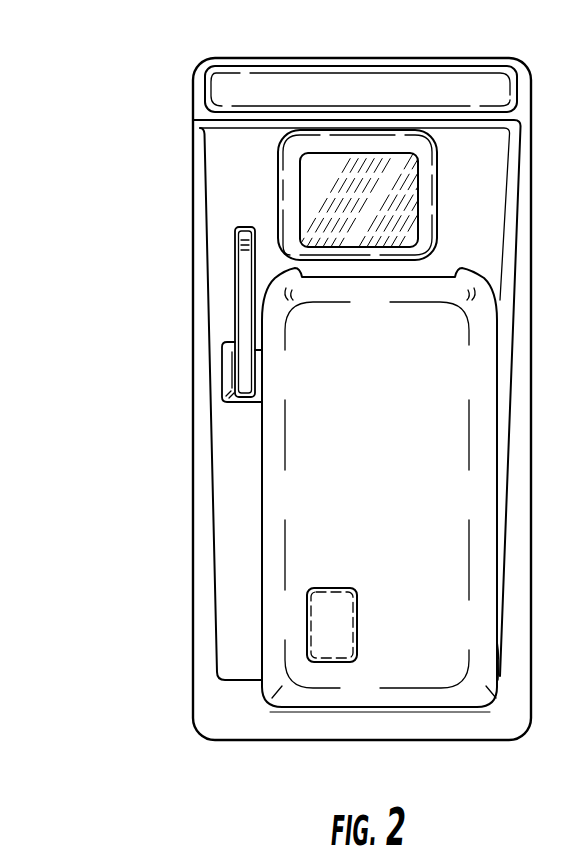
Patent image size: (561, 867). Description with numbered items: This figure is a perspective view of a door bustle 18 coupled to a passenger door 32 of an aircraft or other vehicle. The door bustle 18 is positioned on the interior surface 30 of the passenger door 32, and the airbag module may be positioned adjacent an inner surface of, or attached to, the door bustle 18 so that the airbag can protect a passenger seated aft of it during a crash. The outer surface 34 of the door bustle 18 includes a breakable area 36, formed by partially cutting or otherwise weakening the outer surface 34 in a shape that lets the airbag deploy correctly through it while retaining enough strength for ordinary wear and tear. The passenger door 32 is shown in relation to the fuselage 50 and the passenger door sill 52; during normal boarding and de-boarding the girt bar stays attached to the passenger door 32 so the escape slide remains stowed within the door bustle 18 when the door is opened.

The door bustle 18 is at (317, 376).
The interior surface 30 is at (468, 168).
The passenger door 32 is at (267, 135).
The outer surface 34 is at (256, 443).
The breakable area 36 is at (283, 530).
The fuselage 50 is at (198, 647).
The passenger door sill 52 is at (284, 716).